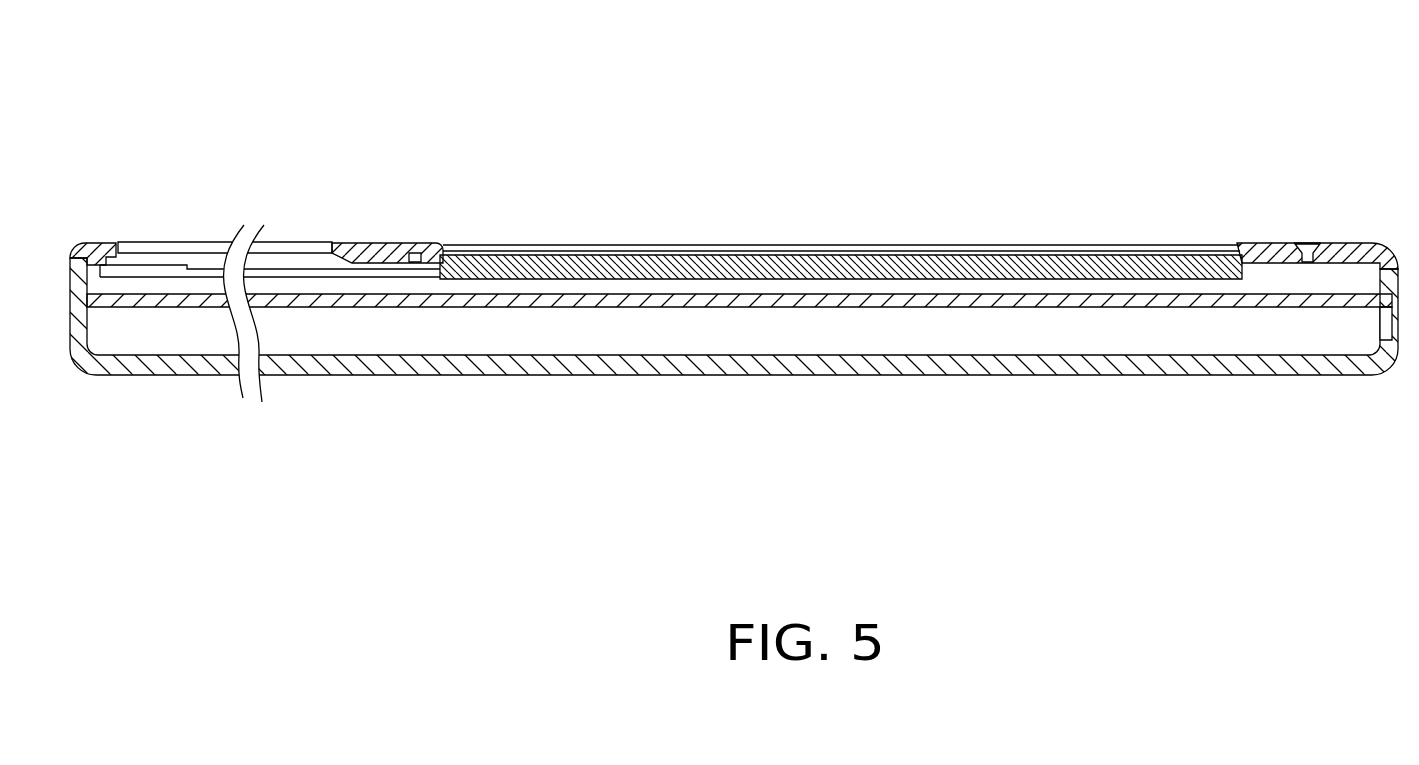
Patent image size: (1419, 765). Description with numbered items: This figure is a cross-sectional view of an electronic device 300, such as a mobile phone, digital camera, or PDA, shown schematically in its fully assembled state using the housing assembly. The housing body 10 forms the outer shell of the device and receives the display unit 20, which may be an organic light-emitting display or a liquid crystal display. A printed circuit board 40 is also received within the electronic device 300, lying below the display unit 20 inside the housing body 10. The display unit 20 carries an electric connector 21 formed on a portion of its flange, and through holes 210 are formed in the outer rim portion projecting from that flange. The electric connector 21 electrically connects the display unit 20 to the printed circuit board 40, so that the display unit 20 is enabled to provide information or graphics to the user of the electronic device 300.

The electronic device 300 is at (789, 96).
The housing body 10 is at (1345, 243).
The electric connector 21 is at (413, 250).
The through holes 210 is at (426, 250).
The display unit 20 is at (516, 250).
The printed circuit board 40 is at (882, 296).